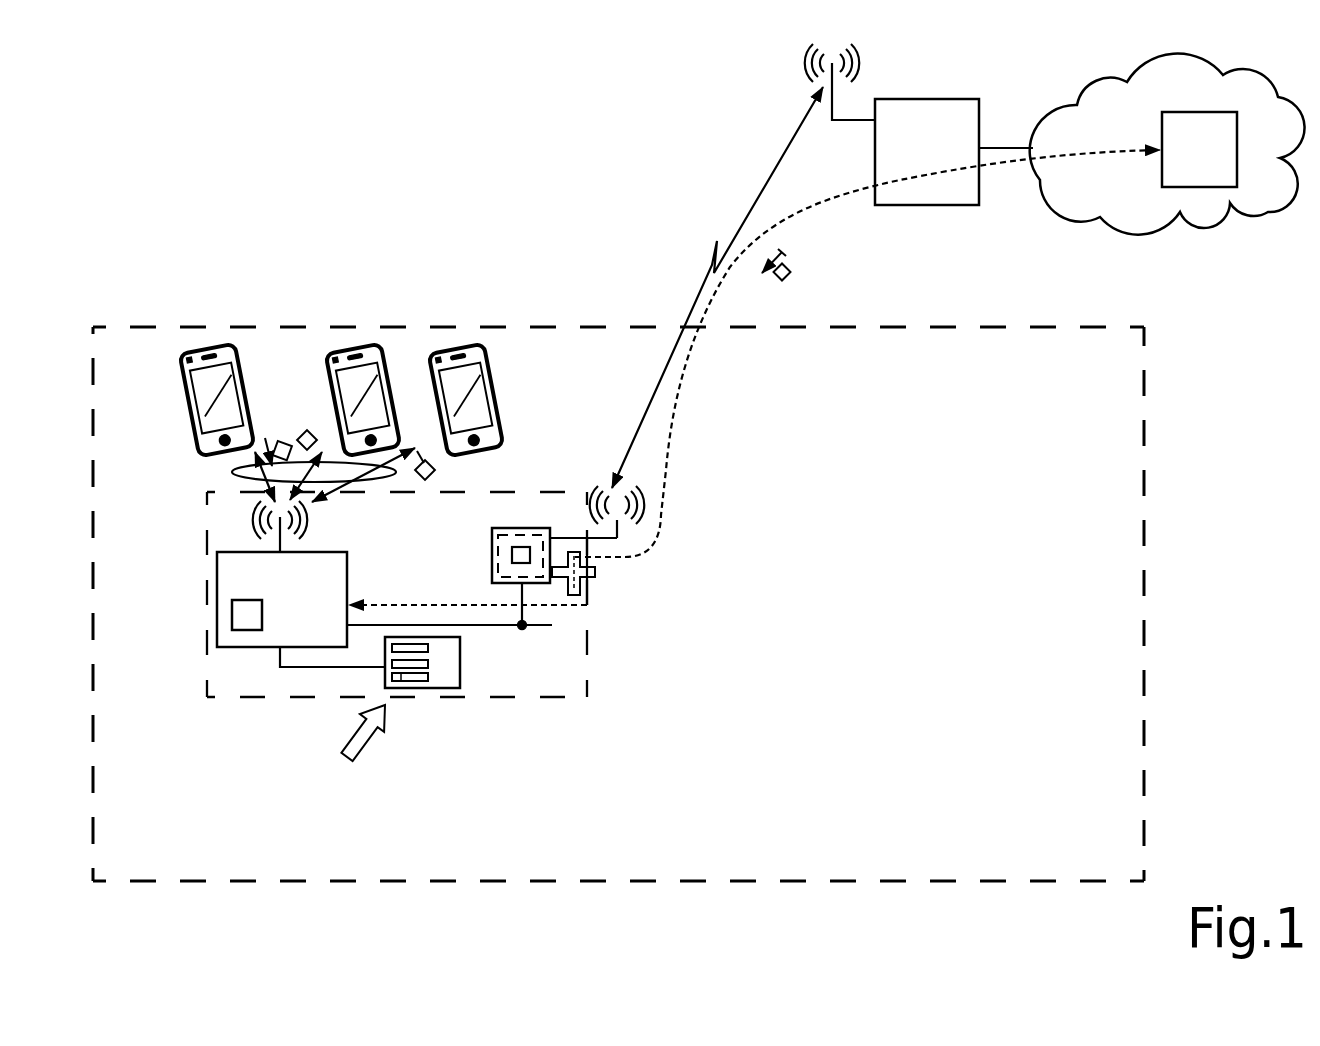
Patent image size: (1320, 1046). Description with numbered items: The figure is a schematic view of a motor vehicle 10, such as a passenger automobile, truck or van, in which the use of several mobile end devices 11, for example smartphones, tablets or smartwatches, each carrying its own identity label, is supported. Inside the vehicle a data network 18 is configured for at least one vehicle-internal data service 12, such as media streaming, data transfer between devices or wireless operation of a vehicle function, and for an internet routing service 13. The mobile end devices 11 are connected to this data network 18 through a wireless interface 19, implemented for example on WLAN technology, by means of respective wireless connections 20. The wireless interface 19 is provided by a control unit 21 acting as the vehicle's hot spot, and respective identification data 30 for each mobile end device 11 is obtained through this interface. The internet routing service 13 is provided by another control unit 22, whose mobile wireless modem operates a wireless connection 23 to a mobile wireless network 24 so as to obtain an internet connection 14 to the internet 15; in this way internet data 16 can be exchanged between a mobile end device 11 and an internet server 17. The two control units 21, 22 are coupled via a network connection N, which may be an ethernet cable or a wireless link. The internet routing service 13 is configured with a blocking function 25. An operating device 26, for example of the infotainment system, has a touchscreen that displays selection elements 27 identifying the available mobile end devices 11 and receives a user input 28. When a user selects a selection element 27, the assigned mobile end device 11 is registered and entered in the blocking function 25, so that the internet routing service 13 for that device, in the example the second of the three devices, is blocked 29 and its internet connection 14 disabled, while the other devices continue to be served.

The motor vehicle 10 is at (1144, 584).
The mobile end device 11 is at (205, 348).
The vehicle-internal data service 12 is at (232, 608).
The internet routing service 13 is at (492, 540).
The internet connection 14 is at (667, 413).
The internet 15 is at (1268, 212).
The internet data 16 is at (795, 277).
The internet server 17 is at (1208, 187).
The data network 18 is at (207, 643).
The wireless interface 19 is at (285, 551).
The wireless connection 20 is at (232, 473).
The control unit 21 is at (217, 562).
The control unit 22 is at (492, 568).
The wireless connection 23 is at (705, 263).
The mobile wireless network 24 is at (920, 205).
The blocking function 25 is at (521, 546).
The operating device 26 is at (450, 688).
The selection element 27 is at (428, 648).
The user input 28 is at (357, 722).
The blocked 29 is at (595, 572).
The identification data 30 is at (278, 436).
The network connection N is at (545, 627).